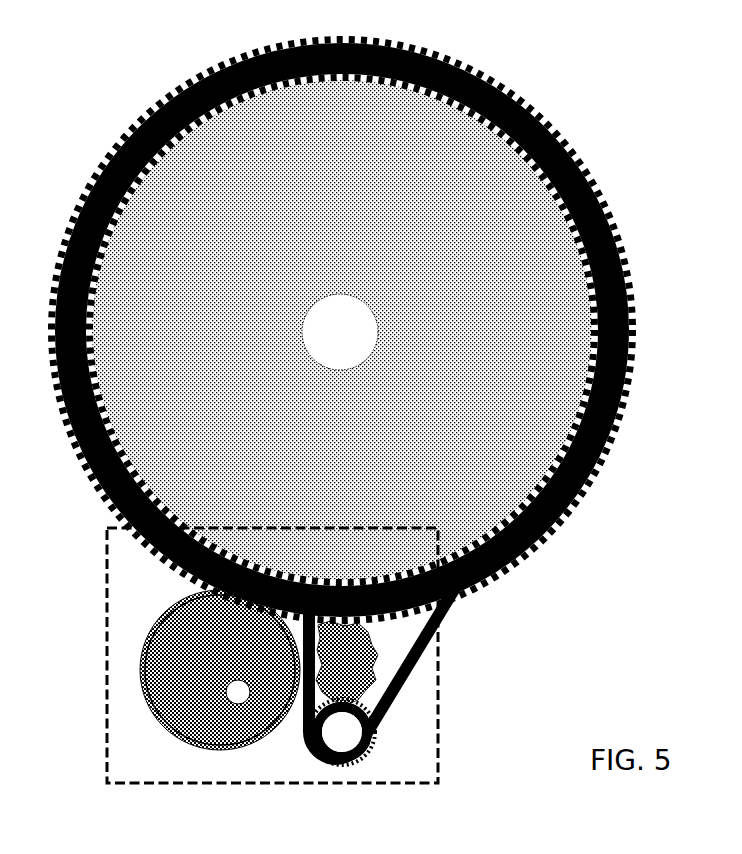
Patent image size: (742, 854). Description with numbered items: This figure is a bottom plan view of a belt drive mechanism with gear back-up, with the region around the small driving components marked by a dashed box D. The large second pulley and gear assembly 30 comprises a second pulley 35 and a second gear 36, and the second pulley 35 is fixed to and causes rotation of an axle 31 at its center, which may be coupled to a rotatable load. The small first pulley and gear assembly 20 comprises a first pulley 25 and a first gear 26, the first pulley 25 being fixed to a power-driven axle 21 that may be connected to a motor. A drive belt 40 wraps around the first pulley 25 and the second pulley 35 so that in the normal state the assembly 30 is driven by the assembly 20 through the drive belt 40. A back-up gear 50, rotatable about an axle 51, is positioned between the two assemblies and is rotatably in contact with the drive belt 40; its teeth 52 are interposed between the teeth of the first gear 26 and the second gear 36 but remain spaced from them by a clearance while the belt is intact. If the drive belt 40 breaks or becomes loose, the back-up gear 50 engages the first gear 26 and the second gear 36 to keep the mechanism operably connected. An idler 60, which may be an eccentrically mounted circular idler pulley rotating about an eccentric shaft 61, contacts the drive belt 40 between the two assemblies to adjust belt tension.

The second pulley and gear assembly 30 is at (384, 330).
The axle 31 is at (341, 332).
The second pulley 35 is at (606, 456).
The second gear 36 is at (636, 362).
The axle 51 is at (293, 600).
The teeth 52 is at (345, 655).
The drive belt 40 is at (458, 626).
The back-up gear 50 is at (390, 666).
The idler 60 is at (220, 706).
The shaft 61 is at (238, 686).
The first pulley and gear assembly 20 is at (400, 769).
The axle 21 is at (384, 724).
The first pulley 25 is at (355, 762).
The first gear 26 is at (353, 722).
The detail region D is at (107, 763).